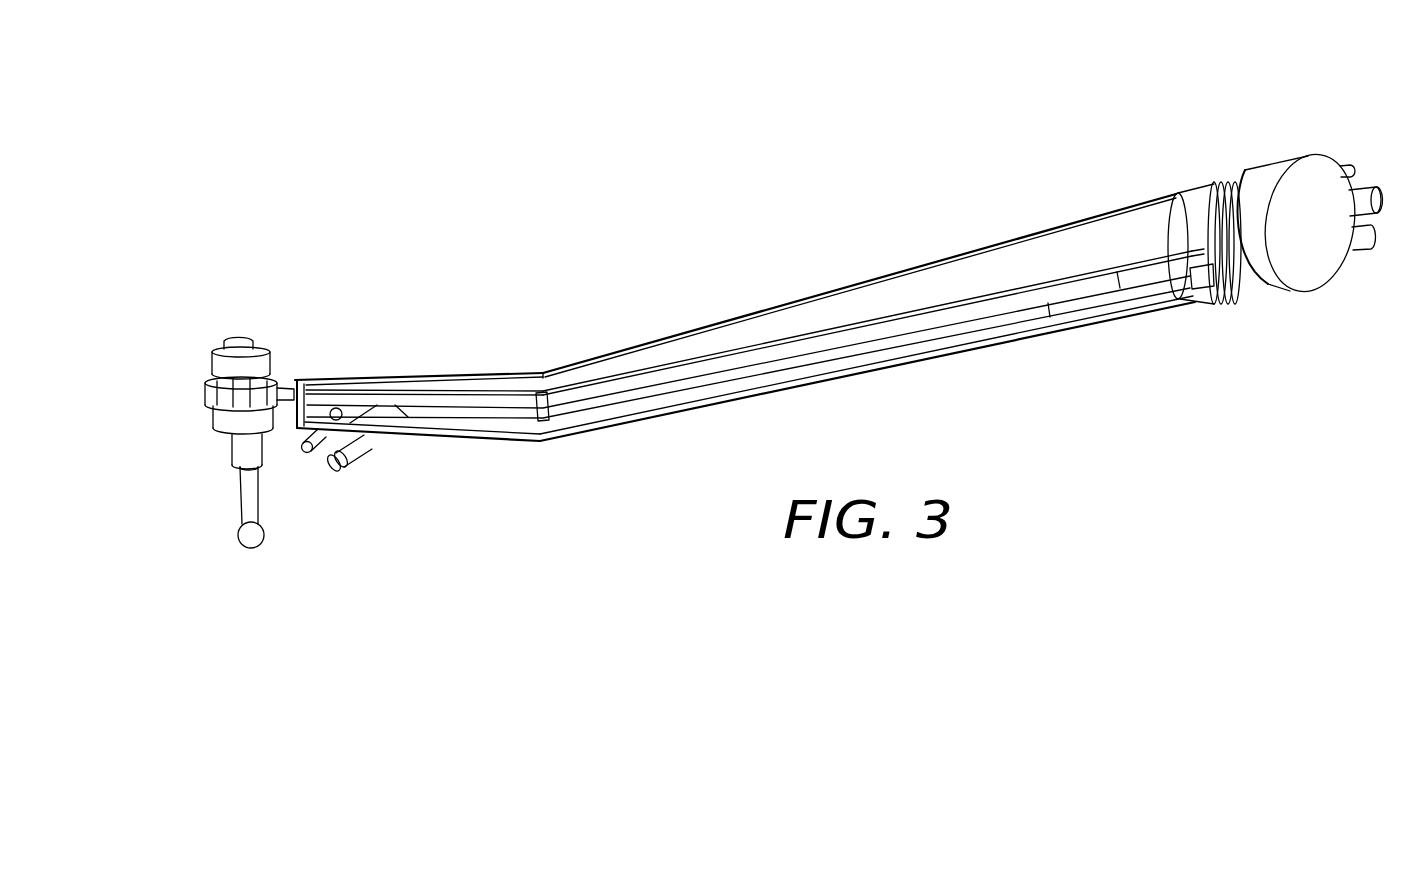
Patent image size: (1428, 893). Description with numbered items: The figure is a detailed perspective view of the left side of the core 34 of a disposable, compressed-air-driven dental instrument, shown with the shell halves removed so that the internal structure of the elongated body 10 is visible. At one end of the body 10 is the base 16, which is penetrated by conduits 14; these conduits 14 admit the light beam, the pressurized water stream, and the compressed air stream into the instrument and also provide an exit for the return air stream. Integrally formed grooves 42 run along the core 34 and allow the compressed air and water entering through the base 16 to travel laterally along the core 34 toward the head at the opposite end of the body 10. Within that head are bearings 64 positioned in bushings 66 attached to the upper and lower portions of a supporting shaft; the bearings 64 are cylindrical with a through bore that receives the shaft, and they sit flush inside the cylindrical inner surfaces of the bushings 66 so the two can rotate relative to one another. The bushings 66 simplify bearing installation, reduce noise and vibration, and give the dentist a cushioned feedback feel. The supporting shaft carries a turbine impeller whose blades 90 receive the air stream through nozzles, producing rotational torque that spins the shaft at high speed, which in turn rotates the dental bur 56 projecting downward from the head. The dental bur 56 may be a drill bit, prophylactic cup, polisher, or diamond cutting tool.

The body 10 is at (889, 212).
The conduits 14 is at (1384, 173).
The base 16 is at (1282, 141).
The core 34 is at (1018, 262).
The grooves 42 is at (843, 313).
The dental bur 56 is at (280, 530).
The bearings 64 is at (222, 442).
The bushings 66 is at (224, 362).
The blades 90 is at (243, 382).